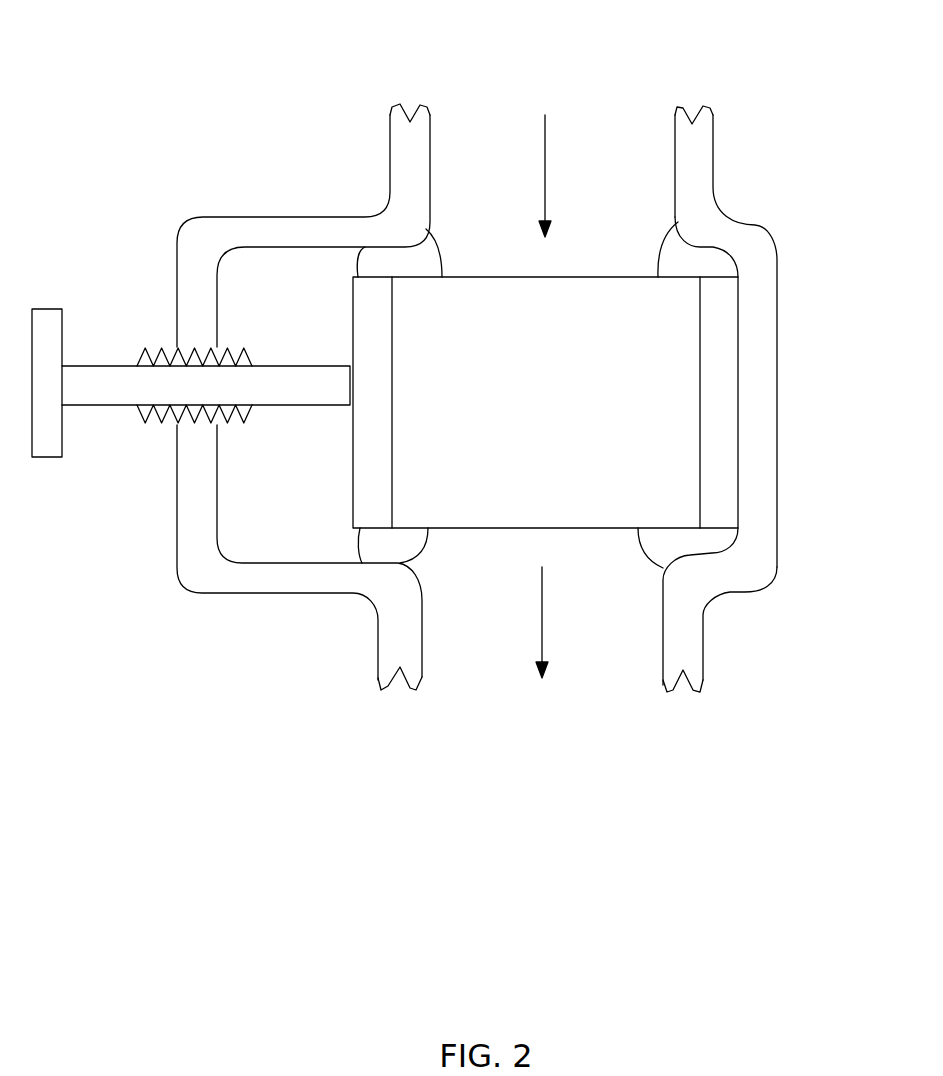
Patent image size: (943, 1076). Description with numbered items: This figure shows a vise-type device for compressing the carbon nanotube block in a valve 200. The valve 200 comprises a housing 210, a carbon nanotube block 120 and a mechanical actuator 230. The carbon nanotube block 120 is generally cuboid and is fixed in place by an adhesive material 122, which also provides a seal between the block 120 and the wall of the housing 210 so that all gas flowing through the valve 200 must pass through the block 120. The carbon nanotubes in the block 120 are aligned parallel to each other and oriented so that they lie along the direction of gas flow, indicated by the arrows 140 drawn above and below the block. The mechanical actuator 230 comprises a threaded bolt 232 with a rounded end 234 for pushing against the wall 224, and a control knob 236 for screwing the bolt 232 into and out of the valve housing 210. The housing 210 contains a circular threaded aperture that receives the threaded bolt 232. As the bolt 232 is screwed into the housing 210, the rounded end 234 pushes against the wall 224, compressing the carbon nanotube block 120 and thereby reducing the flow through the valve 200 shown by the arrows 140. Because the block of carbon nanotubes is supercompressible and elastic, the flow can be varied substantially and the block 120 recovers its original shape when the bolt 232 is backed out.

The valve 200 is at (198, 95).
The carbon nanotube block 120 is at (662, 483).
The adhesive material 122 is at (698, 260).
The wall 224 is at (363, 505).
The housing 210 is at (405, 143).
The arrows 140 is at (547, 152).
The mechanical actuator 230 is at (110, 258).
The threaded bolt 232 is at (293, 377).
The rounded end 234 is at (348, 387).
The control knob 236 is at (42, 437).